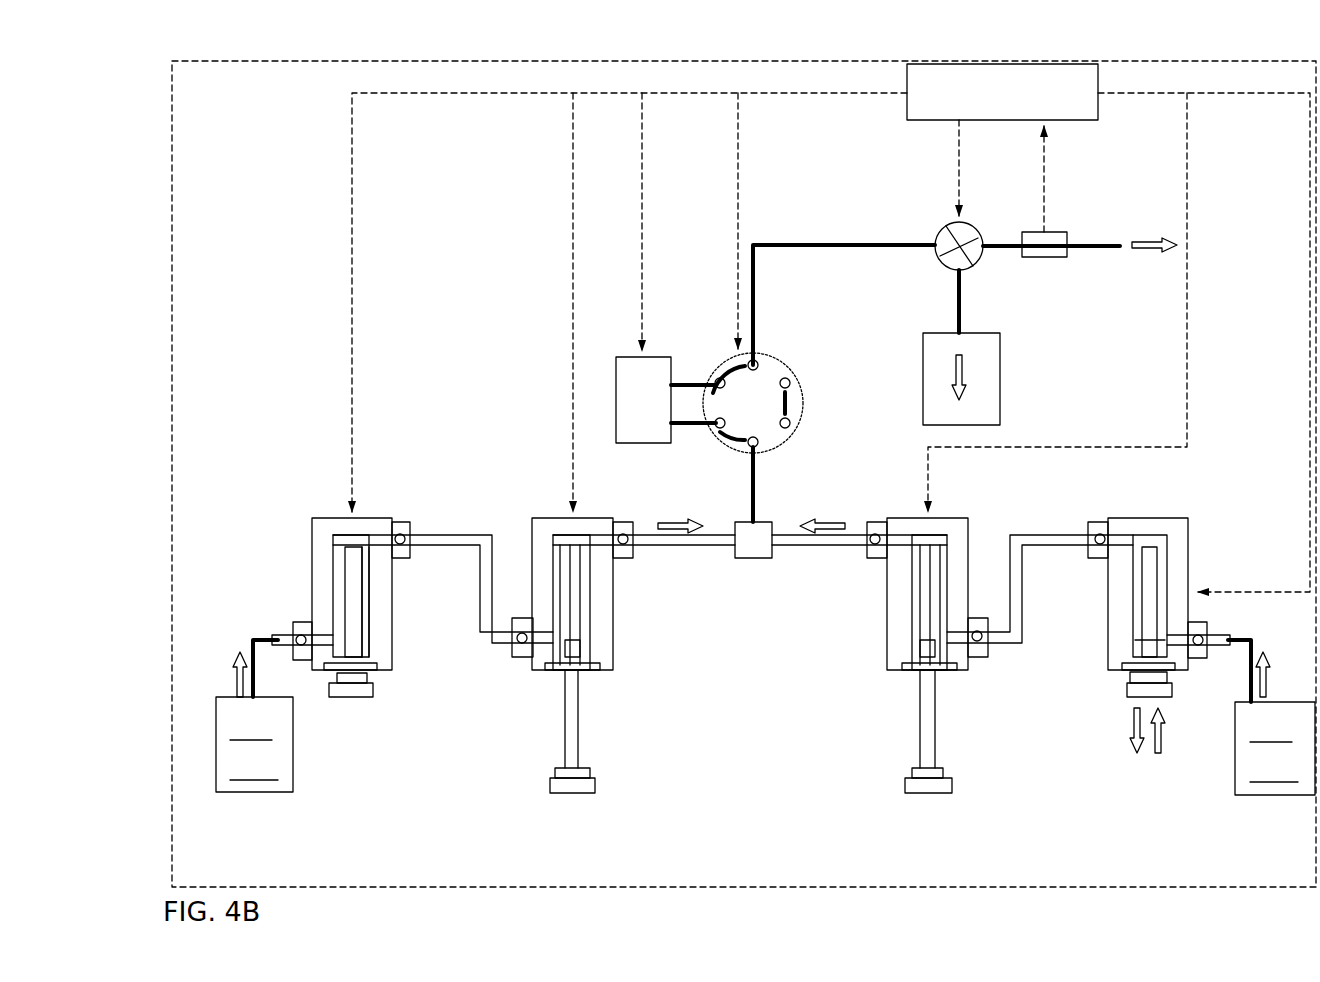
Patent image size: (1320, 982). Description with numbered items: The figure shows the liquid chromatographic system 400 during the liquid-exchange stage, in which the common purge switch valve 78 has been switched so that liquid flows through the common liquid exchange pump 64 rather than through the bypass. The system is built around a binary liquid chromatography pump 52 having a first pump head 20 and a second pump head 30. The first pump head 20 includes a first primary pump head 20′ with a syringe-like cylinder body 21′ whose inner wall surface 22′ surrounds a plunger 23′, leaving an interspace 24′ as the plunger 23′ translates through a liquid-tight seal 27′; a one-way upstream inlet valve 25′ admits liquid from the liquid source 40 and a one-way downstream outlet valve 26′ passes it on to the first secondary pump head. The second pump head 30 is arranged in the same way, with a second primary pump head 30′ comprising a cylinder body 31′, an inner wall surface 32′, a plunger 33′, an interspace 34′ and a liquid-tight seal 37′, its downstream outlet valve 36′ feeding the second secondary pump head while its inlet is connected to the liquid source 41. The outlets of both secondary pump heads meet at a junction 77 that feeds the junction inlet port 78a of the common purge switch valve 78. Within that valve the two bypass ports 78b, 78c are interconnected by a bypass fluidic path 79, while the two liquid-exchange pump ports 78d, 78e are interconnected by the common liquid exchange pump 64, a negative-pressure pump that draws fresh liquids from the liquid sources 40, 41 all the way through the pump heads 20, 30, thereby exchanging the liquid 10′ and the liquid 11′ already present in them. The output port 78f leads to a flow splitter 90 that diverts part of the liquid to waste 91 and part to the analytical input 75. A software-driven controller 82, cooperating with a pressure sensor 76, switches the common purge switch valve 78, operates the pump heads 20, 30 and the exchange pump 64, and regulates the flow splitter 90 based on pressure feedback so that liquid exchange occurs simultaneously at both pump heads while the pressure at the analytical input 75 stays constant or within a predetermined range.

The LC system 400 is at (388, 58).
The software-driven controller 82 is at (987, 109).
The common liquid exchange pump 64 is at (635, 352).
The common purge switch valve 78 is at (759, 404).
The junction inlet port 78a is at (757, 449).
The bypass port 78b is at (790, 427).
The bypass port 78c is at (790, 380).
The liquid-exchange pump port 78d is at (717, 430).
The liquid-exchange pump port 78e is at (718, 378).
The output port 78f is at (758, 368).
The bypass fluidic path 79 is at (792, 403).
The flow splitter 90 is at (938, 230).
The analytical input 75 is at (1110, 243).
The pressure sensor 76 is at (1050, 260).
The waste 91 is at (1000, 385).
The junction 77 is at (753, 560).
The first pump head 20 is at (433, 790).
The first primary pump head 20′ is at (332, 586).
The cylinder body 21′ is at (312, 572).
The inner wall surface 22′ is at (340, 604).
The plunger 23′ is at (367, 591).
The interspace 24′ is at (364, 632).
The one-way upstream inlet valve 25′ is at (302, 662).
The one-way downstream outlet valve 26′ is at (400, 520).
The liquid-tight seal 27′ is at (373, 683).
The liquid 10′ is at (566, 545).
The liquid source 40 is at (257, 794).
The second pump head 30 is at (1082, 797).
The second primary pump head 30′ is at (1158, 604).
The cylinder body 31′ is at (1190, 563).
The inner wall surface 32′ is at (1133, 612).
The plunger 33′ is at (1160, 553).
The interspace 34′ is at (1133, 645).
The one-way downstream outlet valve 36′ is at (1100, 520).
The liquid-tight seal 37′ is at (1120, 680).
The liquid 11′ is at (930, 540).
The liquid source 41 is at (1285, 798).
The binary liquid chromatography pump 52 is at (777, 775).